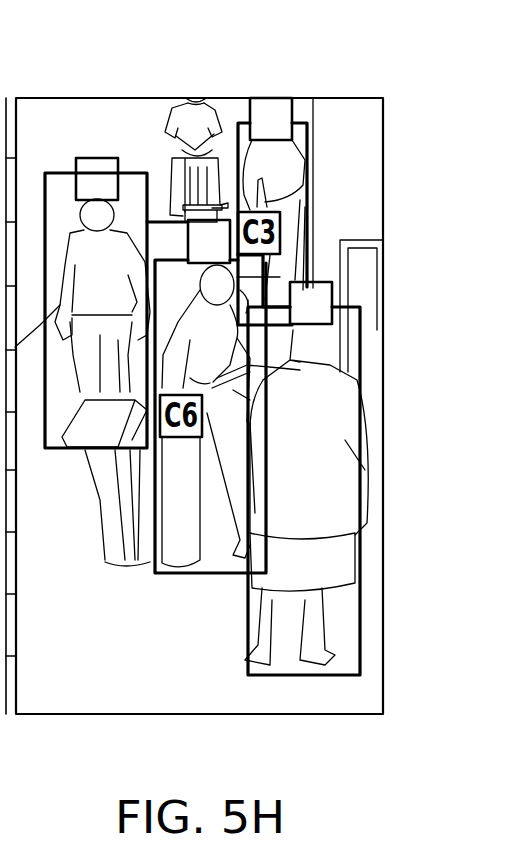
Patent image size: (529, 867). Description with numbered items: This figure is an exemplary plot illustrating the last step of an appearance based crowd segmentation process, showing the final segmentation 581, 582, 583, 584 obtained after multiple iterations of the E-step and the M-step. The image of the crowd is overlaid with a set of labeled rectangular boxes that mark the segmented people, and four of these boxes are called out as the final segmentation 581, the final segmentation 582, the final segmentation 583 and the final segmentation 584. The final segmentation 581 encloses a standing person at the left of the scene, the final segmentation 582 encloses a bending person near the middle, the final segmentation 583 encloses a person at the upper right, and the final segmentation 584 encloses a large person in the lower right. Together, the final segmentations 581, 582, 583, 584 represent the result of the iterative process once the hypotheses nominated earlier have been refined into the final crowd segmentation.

The final segmentation 581 is at (60, 172).
The final segmentation 582 is at (172, 258).
The final segmentation 583 is at (310, 148).
The final segmentation 584 is at (360, 360).